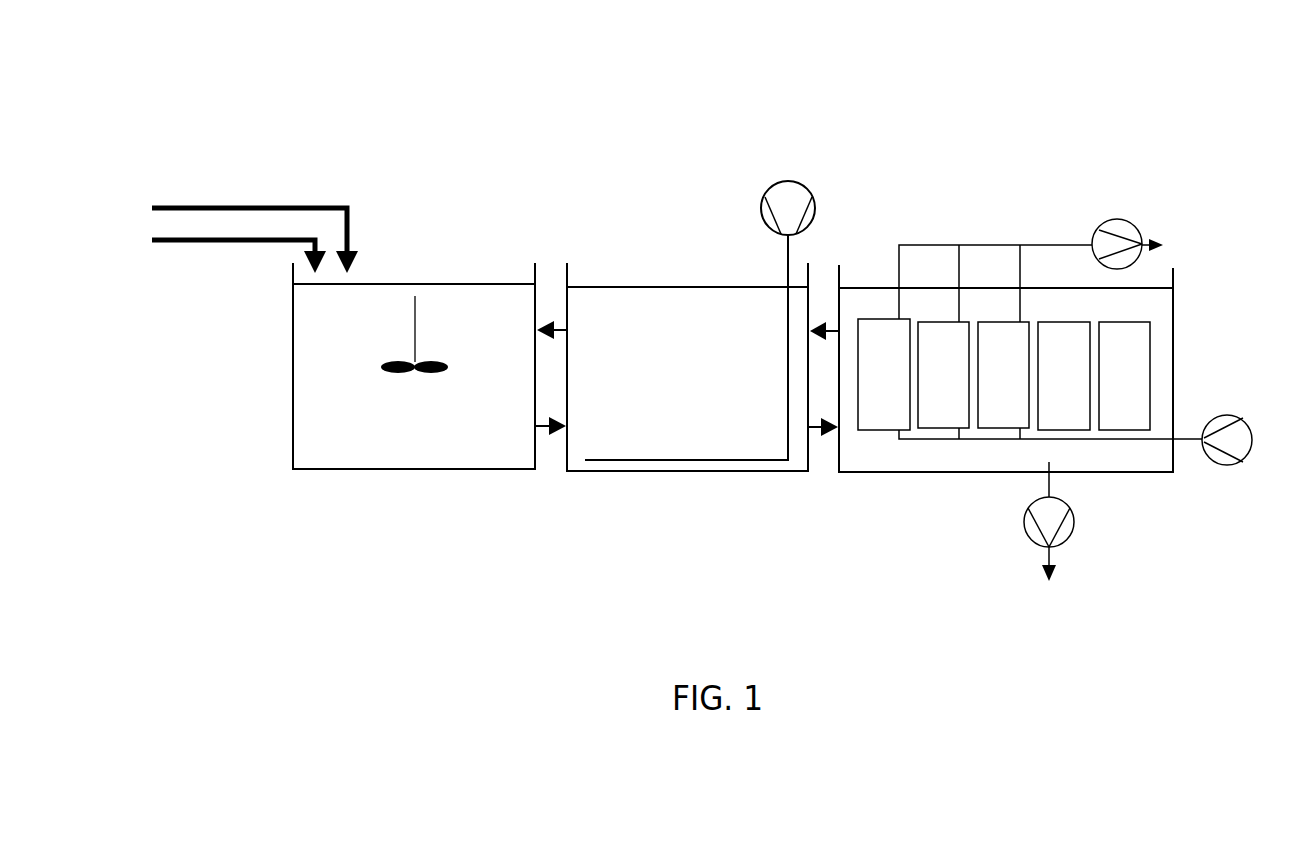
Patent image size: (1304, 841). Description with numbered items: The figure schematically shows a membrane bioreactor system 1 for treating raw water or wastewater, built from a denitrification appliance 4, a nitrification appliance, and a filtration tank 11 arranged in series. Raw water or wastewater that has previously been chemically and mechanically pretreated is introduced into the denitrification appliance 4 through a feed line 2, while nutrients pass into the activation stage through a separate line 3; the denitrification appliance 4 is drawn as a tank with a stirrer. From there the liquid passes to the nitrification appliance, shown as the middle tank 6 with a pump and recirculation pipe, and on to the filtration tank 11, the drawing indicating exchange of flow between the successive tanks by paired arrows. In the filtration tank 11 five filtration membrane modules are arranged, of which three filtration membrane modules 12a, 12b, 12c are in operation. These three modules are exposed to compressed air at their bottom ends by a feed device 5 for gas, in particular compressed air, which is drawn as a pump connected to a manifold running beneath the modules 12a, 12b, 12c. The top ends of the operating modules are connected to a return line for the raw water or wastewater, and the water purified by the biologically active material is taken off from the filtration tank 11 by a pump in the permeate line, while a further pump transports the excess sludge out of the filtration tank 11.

The membrane bioreactor system 1 is at (652, 122).
The feed line 2 is at (348, 222).
The line 3 is at (243, 242).
The denitrification appliance 4 is at (425, 469).
The feed device for gas 5 is at (1100, 440).
The aeration tank 6 is at (697, 471).
The filtration tank 11 is at (958, 472).
The filtration membrane module 12a is at (890, 318).
The filtration membrane module 12b is at (948, 321).
The filtration membrane module 12c is at (1010, 321).